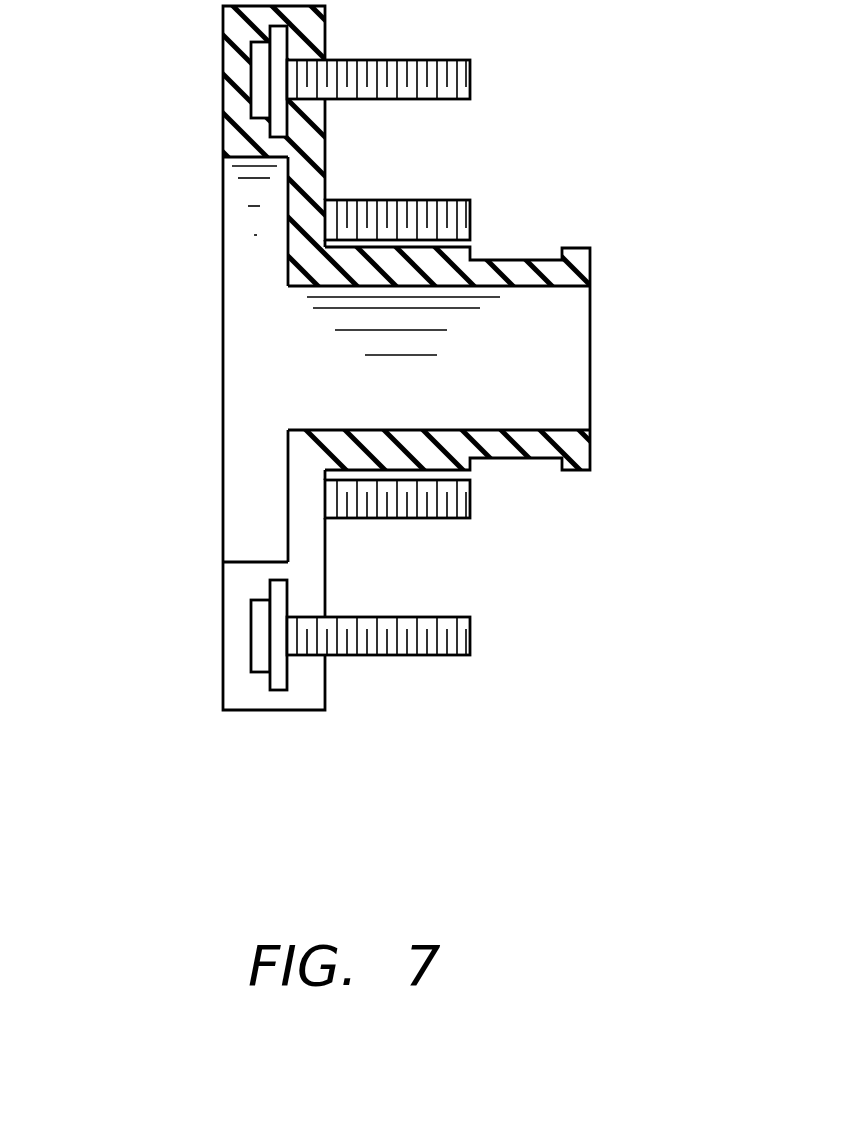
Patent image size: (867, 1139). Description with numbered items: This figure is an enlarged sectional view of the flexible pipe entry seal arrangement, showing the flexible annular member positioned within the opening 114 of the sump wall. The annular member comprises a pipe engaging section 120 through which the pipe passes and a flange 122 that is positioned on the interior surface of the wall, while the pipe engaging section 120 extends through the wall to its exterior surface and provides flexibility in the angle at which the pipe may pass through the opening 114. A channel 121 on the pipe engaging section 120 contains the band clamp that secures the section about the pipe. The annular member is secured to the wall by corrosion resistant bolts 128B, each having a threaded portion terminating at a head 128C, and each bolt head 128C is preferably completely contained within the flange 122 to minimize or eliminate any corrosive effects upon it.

The opening 114 is at (281, 371).
The pipe engaging section 120 is at (527, 286).
The channel 121 is at (505, 261).
The flange 122 is at (300, 210).
The bolts 128B is at (405, 78).
The head 128C is at (262, 78).